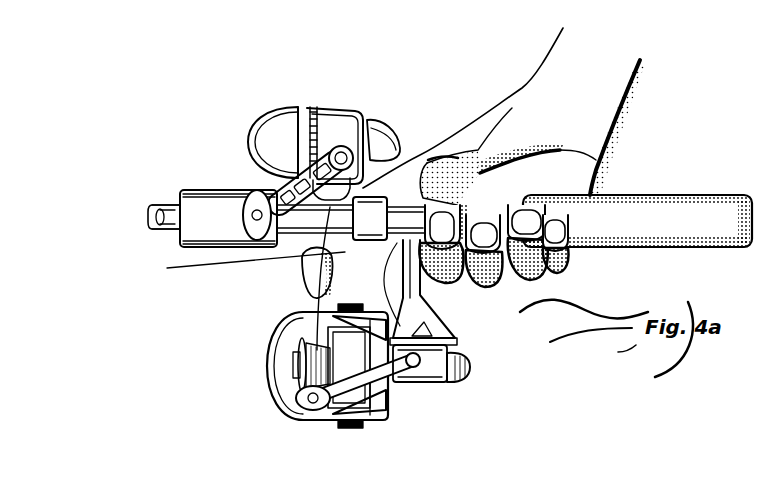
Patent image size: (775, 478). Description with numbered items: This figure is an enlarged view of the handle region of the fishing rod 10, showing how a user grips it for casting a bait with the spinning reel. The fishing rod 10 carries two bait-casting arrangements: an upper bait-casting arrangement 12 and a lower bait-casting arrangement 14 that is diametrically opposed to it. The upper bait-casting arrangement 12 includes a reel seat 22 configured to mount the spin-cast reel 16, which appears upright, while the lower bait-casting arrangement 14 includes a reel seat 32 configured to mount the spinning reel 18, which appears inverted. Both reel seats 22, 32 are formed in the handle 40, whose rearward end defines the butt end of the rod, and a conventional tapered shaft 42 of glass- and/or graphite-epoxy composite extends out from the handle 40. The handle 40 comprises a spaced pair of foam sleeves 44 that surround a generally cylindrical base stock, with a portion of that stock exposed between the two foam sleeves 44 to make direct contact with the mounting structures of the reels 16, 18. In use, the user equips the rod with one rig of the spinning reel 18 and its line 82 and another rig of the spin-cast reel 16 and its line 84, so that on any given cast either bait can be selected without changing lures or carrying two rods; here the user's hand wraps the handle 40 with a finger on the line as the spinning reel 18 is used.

The fishing rod 10 is at (240, 97).
The upper bait-casting arrangement 12 is at (153, 103).
The lower bait-casting arrangement 14 is at (153, 252).
The spin-cast reel 16 is at (340, 108).
The spinning reel 18 is at (417, 385).
The reel seat 22 is at (302, 272).
The reel seat 32 is at (408, 303).
The handle 40 is at (687, 196).
The tapered shaft 42 is at (163, 212).
The foam sleeves 44 is at (220, 200).
The line 82 is at (213, 267).
The line 84 is at (247, 147).